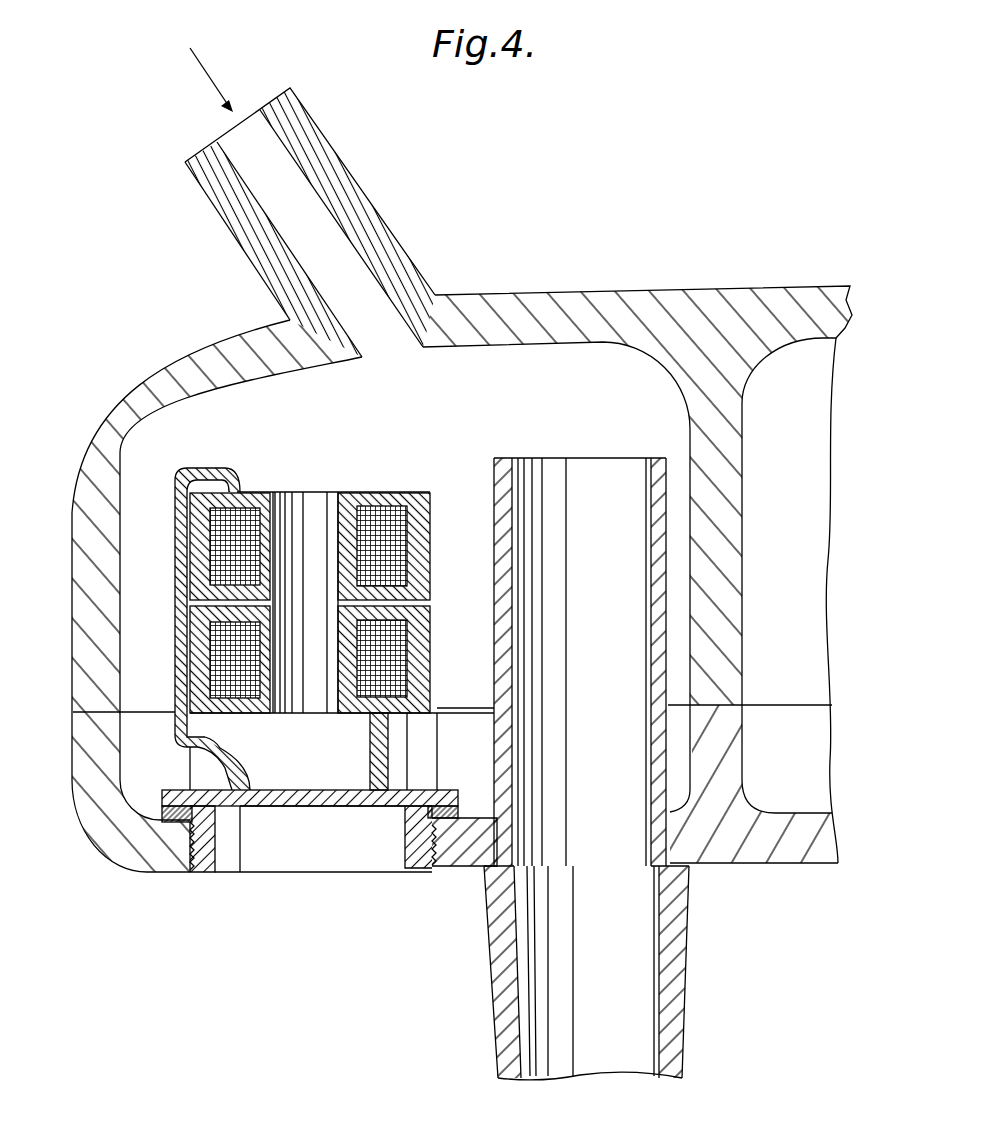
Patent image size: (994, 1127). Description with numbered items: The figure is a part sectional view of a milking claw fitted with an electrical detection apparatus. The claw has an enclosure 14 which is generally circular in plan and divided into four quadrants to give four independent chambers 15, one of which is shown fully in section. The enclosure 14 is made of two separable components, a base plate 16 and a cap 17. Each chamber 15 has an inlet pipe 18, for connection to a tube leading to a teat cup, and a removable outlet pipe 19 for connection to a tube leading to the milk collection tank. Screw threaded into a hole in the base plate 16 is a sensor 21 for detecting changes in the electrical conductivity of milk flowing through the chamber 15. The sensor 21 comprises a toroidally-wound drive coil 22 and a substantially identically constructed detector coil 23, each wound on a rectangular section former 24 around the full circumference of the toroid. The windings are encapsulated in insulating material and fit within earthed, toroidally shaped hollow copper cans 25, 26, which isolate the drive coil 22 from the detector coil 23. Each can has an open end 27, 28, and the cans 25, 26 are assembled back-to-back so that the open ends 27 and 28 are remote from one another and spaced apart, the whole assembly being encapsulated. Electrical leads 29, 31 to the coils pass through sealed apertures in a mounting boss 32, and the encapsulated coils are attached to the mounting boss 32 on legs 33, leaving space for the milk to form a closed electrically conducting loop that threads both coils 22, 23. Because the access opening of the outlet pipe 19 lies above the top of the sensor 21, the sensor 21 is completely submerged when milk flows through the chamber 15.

The enclosure 14 is at (575, 286).
The chamber 15 is at (388, 431).
The base plate 16 is at (112, 857).
The cap 17 is at (107, 400).
The inlet pipe 18 is at (330, 172).
The outlet pipe 19 is at (485, 918).
The sensor 21 is at (163, 600).
The drive coil 22 is at (186, 670).
The detector coil 23 is at (200, 558).
The former 24 is at (238, 522).
The copper can 25 is at (175, 523).
The copper can 26 is at (206, 663).
The open end 27 is at (392, 486).
The open end 28 is at (192, 745).
The electrical lead 29 is at (240, 872).
The electrical lead 31 is at (382, 880).
The mounting boss 32 is at (205, 873).
The leg 33 is at (197, 768).